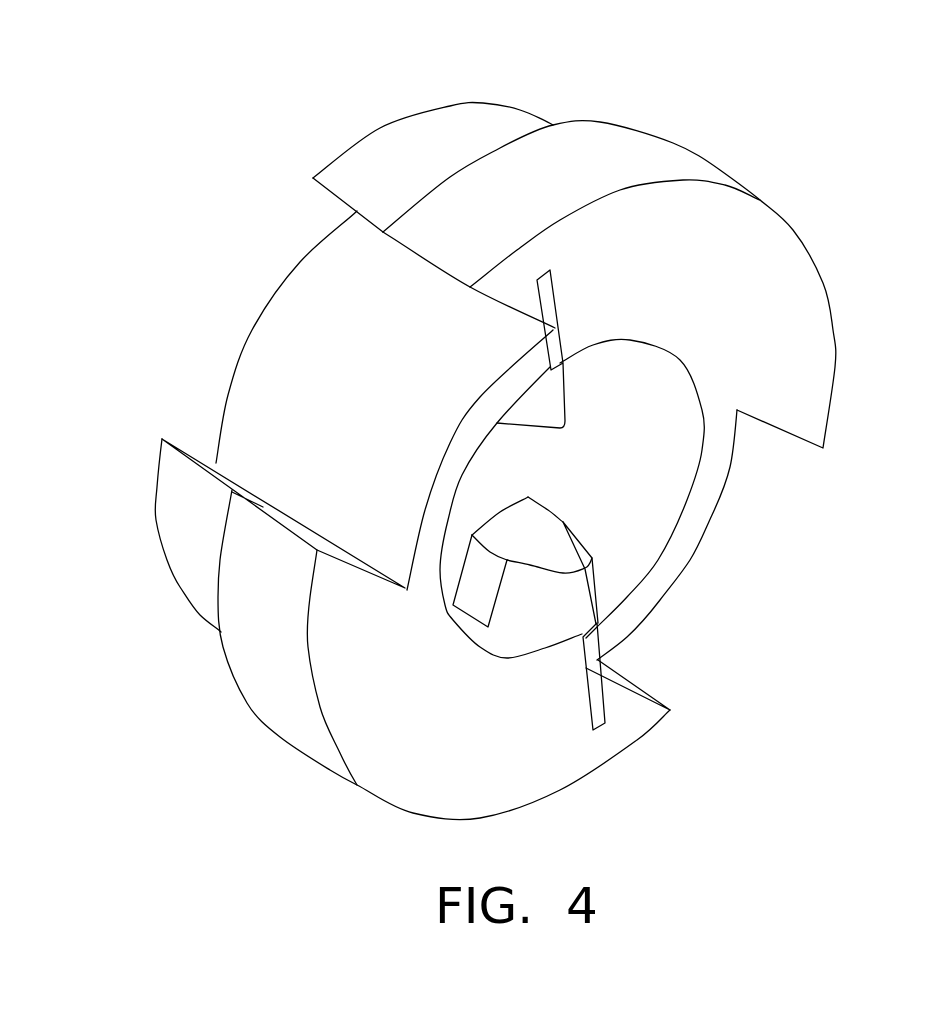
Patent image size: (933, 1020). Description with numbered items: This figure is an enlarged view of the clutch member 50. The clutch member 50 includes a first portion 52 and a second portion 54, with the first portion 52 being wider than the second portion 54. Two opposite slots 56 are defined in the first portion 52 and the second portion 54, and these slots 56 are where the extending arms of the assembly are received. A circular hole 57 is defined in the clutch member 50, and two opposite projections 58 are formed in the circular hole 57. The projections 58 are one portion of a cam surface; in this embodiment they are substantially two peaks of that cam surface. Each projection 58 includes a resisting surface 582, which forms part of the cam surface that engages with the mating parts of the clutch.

The clutch member 50 is at (748, 61).
The first portion 52 is at (627, 163).
The second portion 54 is at (482, 120).
The slots 56 is at (305, 330).
The circular hole 57 is at (653, 432).
The projections 58 is at (548, 553).
The resisting surface 582 is at (550, 605).